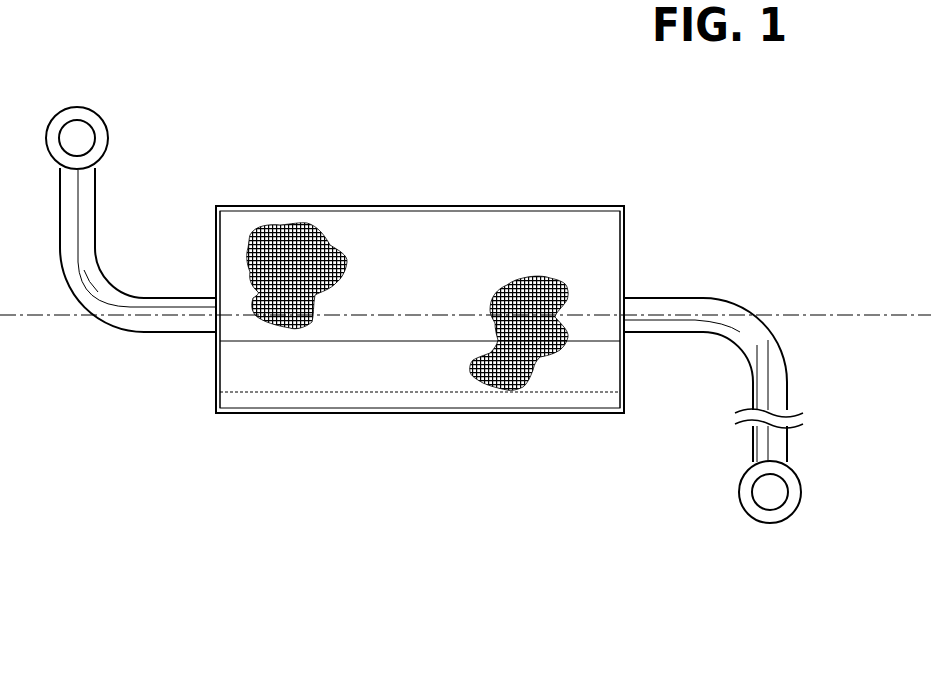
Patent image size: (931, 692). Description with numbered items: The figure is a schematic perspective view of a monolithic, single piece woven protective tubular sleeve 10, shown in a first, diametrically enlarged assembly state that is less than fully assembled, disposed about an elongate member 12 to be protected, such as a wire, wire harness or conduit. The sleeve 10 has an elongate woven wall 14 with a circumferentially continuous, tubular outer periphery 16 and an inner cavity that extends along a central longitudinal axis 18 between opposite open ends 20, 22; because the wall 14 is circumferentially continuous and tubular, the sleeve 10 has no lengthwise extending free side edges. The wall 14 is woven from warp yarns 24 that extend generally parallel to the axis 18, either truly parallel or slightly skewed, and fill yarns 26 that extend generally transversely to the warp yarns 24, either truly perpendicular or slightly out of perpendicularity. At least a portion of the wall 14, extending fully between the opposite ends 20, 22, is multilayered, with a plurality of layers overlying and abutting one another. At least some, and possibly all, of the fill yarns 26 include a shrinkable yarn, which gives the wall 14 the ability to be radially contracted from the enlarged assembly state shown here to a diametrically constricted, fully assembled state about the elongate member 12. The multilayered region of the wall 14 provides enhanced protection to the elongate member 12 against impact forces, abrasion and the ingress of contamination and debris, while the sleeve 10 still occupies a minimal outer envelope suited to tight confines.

The sleeve 10 is at (487, 152).
The elongate member 12 is at (183, 307).
The woven wall 14 is at (395, 238).
The tubular outer periphery 16 is at (498, 245).
The central longitudinal axis 18 is at (820, 313).
The open end 20 is at (216, 252).
The open end 22 is at (624, 377).
The warp yarns 24 is at (312, 292).
The fill yarns 26 is at (310, 321).